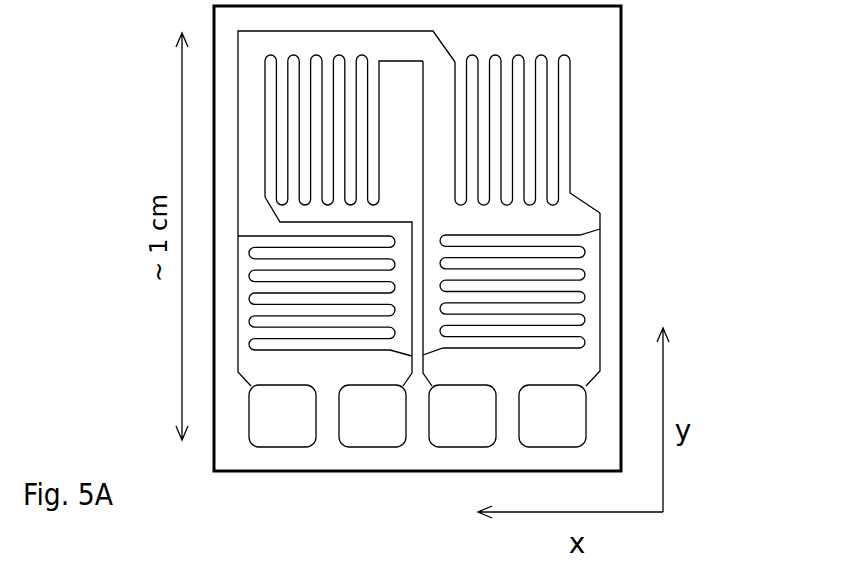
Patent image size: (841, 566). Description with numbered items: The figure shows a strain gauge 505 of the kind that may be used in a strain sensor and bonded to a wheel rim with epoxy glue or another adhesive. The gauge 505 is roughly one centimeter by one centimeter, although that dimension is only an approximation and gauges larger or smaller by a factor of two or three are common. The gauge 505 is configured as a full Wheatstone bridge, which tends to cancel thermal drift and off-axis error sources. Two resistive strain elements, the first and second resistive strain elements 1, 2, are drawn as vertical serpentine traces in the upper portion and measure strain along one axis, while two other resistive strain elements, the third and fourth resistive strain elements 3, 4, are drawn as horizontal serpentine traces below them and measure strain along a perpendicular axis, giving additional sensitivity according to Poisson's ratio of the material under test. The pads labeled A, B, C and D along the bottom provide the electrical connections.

The strain gauge 505 is at (498, 238).
The resistive strain element R1 1 is at (344, 130).
The resistive strain element R2 2 is at (527, 134).
The resistive strain element R3 3 is at (325, 296).
The resistive strain element R4 4 is at (511, 292).